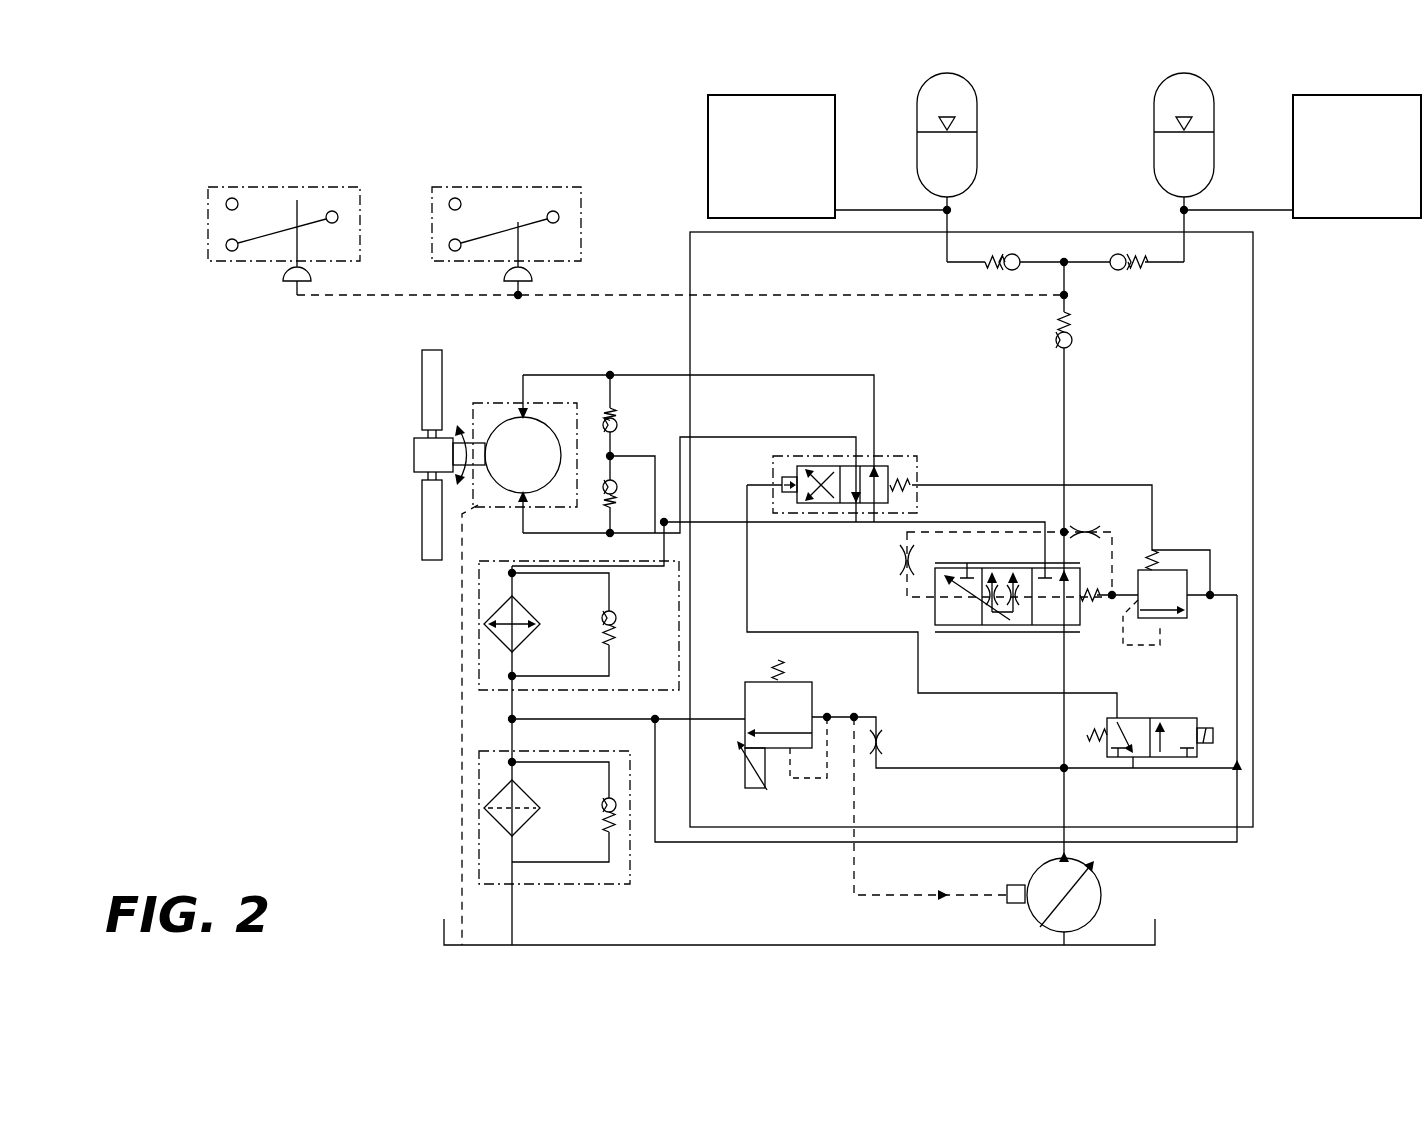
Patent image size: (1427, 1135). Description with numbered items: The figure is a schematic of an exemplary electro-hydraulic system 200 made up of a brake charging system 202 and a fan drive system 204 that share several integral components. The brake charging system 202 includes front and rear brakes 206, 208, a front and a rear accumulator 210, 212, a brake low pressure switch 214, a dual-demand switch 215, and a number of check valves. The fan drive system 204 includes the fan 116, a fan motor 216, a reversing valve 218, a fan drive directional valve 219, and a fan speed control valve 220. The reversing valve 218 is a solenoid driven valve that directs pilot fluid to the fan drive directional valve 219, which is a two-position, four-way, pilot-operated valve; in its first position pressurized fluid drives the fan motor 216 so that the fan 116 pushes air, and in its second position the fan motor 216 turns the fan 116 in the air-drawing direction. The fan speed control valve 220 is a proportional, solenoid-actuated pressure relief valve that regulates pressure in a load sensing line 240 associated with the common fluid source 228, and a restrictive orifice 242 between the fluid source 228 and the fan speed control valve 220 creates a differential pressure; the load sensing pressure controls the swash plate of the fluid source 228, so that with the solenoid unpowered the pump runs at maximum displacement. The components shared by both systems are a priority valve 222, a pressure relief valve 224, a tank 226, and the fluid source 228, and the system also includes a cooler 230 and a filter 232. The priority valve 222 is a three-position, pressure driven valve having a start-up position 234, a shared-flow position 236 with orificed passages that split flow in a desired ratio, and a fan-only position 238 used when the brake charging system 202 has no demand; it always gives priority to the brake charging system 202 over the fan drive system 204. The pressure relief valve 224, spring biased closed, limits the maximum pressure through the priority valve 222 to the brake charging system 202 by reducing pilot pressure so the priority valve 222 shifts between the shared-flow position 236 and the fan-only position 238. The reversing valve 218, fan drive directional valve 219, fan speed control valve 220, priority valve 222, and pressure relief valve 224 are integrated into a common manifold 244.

The electro-hydraulic system 200 is at (648, 117).
The brake charging system 202 is at (1243, 364).
The fan drive system 204 is at (414, 467).
The fan 116 is at (420, 560).
The front brake 206 is at (835, 120).
The rear brake 208 is at (1293, 120).
The front accumulator 210 is at (978, 122).
The rear accumulator 212 is at (1153, 122).
The brake low pressure switch 214 is at (478, 187).
The dual-demand switch 215 is at (260, 187).
The fan motor 216 is at (528, 418).
The reversing valve 218 is at (1152, 757).
The fan drive directional valve 219 is at (888, 466).
The fan speed control valve 220 is at (812, 690).
The priority valve 222 is at (1022, 585).
The pressure relief valve 224 is at (1187, 614).
The tank 226 is at (752, 945).
The fluid source 228 is at (1102, 900).
The cooler 230 is at (479, 605).
The filter 232 is at (479, 808).
The start-up position 234 is at (1082, 587).
The shared-flow position 236 is at (992, 568).
The fan-only position 238 is at (966, 568).
The load sensing line 240 is at (940, 906).
The restrictive orifice 242 is at (886, 745).
The common manifold 244 is at (1255, 448).